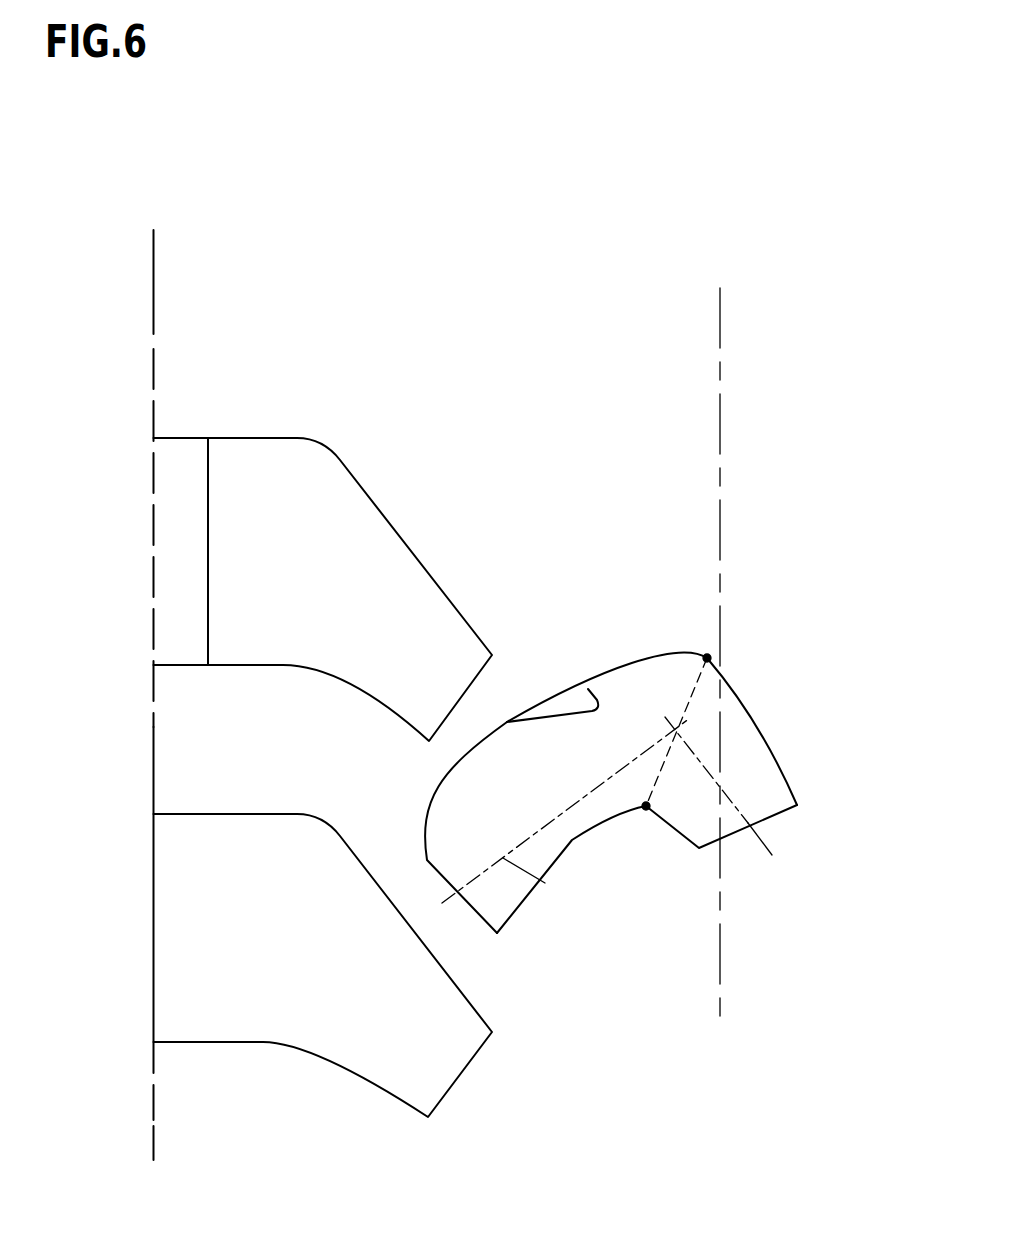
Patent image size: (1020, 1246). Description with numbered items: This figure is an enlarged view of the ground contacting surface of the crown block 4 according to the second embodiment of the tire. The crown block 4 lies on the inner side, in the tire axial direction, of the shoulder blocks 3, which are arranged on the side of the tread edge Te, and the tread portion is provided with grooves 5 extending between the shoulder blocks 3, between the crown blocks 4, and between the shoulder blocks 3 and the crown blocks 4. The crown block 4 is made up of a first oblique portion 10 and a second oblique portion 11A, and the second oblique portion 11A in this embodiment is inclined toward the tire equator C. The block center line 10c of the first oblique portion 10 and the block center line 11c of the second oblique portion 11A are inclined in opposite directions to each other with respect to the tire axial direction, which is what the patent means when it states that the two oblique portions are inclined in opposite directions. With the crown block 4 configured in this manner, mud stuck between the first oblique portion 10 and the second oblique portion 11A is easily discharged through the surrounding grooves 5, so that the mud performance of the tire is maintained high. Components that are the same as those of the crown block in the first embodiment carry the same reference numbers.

The shoulder block 3 is at (266, 547).
The crown block 4 is at (786, 649).
The groove 5 is at (502, 981).
The first oblique portion 10 is at (588, 813).
The block center line of the first oblique portion 10c is at (545, 883).
The second oblique portion 11A is at (745, 760).
The block center line of the second oblique portion 11c is at (765, 843).
The tread edge Te is at (152, 257).
The tire equator C is at (719, 641).